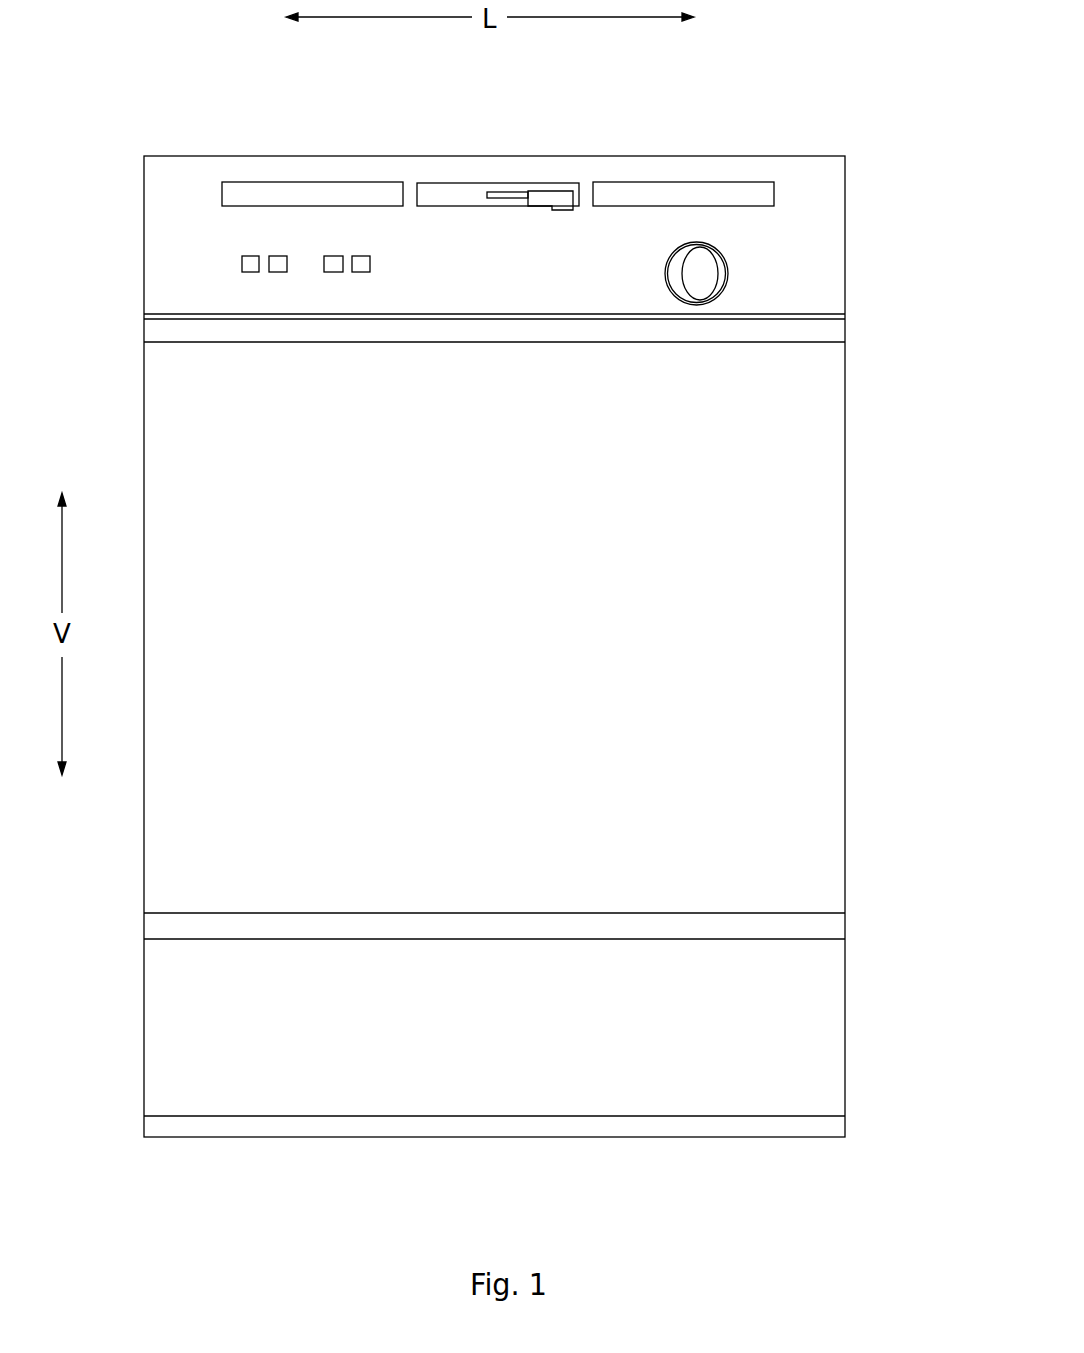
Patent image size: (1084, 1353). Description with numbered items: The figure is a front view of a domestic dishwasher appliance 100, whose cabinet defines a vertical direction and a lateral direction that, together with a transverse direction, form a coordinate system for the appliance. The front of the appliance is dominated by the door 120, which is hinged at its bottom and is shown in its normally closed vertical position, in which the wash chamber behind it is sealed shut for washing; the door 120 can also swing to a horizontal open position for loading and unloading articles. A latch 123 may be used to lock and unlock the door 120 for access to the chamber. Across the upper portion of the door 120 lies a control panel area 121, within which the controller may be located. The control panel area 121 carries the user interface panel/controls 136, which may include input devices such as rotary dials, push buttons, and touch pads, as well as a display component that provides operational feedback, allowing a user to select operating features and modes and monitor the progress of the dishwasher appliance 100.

The dishwasher appliance 100 is at (758, 117).
The door 120 is at (788, 607).
The control panel area 121 is at (818, 210).
The latch 123 is at (562, 198).
The user interface panel/controls 136 is at (329, 258).